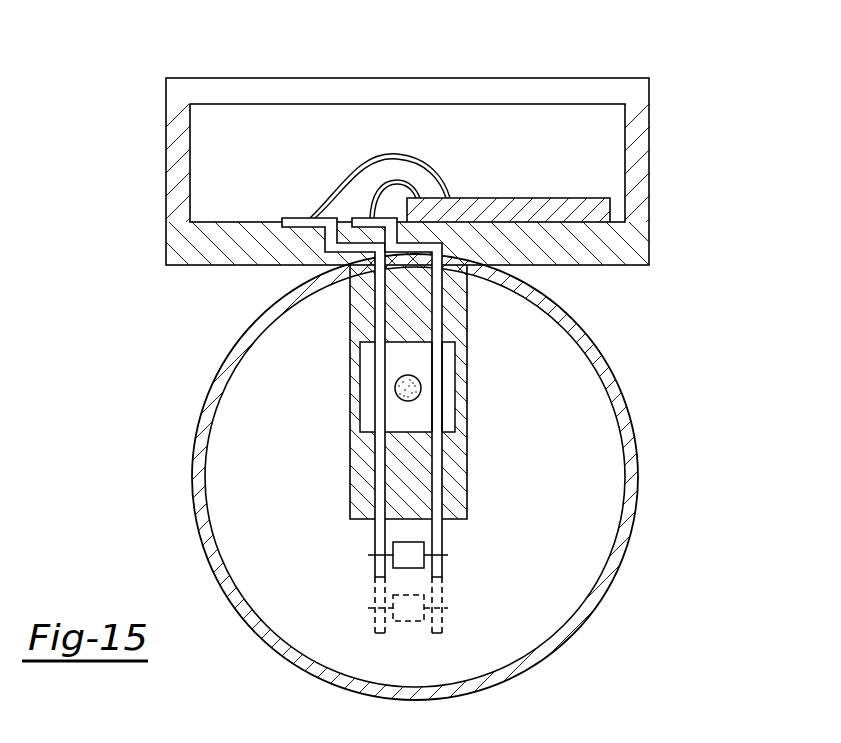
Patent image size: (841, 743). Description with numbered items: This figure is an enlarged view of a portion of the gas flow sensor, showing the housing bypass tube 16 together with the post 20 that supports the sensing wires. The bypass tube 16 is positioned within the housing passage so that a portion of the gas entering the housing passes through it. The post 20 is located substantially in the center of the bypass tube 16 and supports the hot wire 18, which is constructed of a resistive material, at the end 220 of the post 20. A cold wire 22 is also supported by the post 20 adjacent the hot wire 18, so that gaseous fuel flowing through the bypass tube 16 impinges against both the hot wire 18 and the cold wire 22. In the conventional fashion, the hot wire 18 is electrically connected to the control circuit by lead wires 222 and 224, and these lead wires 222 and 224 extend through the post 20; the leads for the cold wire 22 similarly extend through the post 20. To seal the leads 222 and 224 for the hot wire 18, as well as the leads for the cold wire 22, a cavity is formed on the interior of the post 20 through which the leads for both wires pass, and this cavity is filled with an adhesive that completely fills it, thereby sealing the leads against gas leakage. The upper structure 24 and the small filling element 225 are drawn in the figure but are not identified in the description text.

The housing / package 24 is at (532, 131).
The bypass tube 16 is at (620, 565).
The post 20 is at (360, 321).
The lead wire 222 is at (363, 404).
The end of the post 220 is at (443, 519).
The lead wire 224 is at (440, 390).
The ball / bead 225 is at (412, 362).
The hot wire 18 is at (392, 550).
The cold wire 22 is at (392, 601).